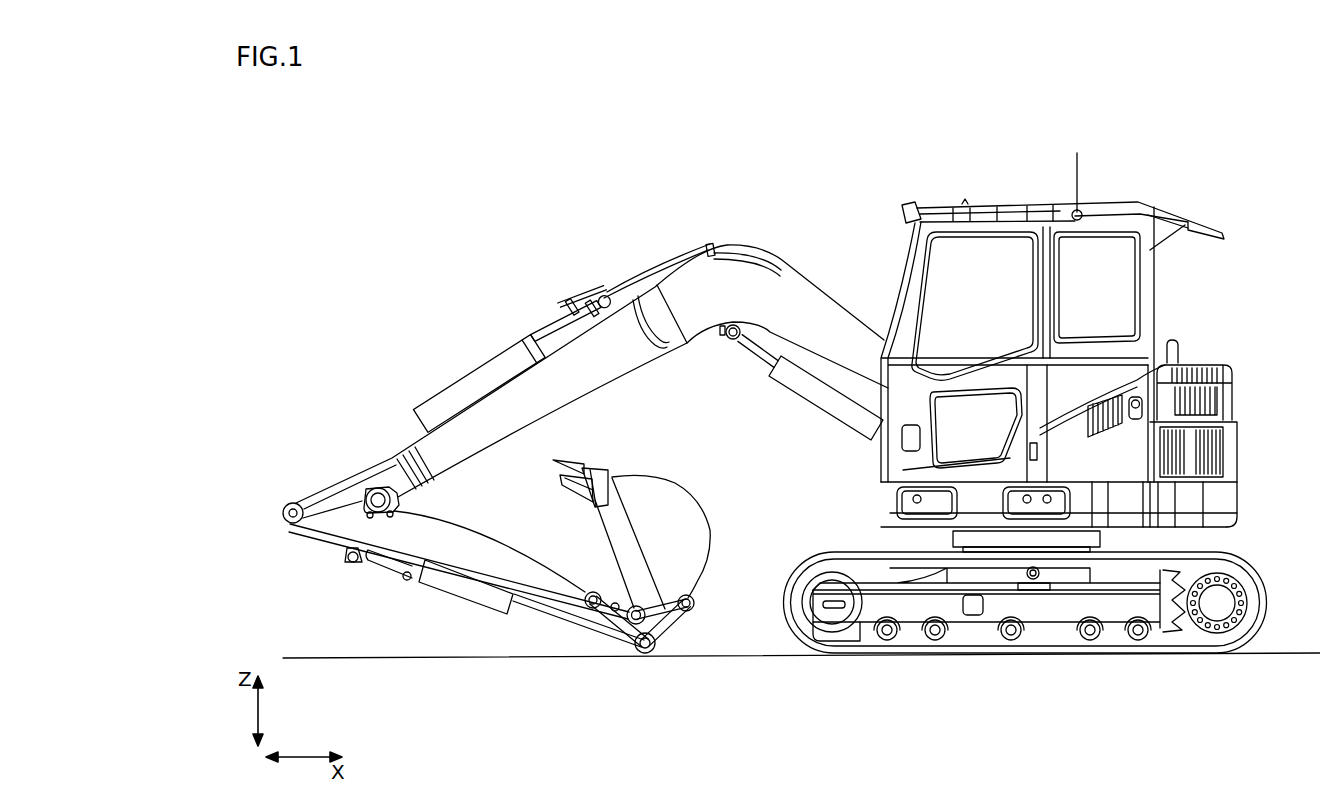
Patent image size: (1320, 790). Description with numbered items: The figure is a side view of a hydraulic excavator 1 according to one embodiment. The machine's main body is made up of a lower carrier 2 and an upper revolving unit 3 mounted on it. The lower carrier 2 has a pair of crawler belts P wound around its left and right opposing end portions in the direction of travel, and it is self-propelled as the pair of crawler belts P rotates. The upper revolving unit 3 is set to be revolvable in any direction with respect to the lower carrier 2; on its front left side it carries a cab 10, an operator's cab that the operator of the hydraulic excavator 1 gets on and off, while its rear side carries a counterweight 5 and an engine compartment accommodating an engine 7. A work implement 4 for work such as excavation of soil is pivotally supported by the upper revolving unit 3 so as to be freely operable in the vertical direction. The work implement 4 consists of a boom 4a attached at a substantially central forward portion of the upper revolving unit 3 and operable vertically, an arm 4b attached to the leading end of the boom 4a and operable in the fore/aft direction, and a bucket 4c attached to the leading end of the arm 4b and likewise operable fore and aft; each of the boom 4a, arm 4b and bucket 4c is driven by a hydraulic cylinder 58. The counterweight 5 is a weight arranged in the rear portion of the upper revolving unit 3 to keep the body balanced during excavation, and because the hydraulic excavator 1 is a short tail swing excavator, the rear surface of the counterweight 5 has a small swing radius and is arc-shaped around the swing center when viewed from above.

The hydraulic excavator 1 is at (1196, 135).
The lower carrier 2 is at (772, 612).
The upper revolving unit 3 is at (893, 499).
The work implement 4 is at (729, 222).
The boom 4a is at (555, 388).
The arm 4b is at (434, 545).
The bucket 4c is at (667, 503).
The counterweight 5 is at (1238, 481).
The engine 7 is at (1224, 397).
The cab 10 is at (903, 181).
The hydraulic cylinder 58 is at (453, 393).
The crawler belt P is at (1248, 586).